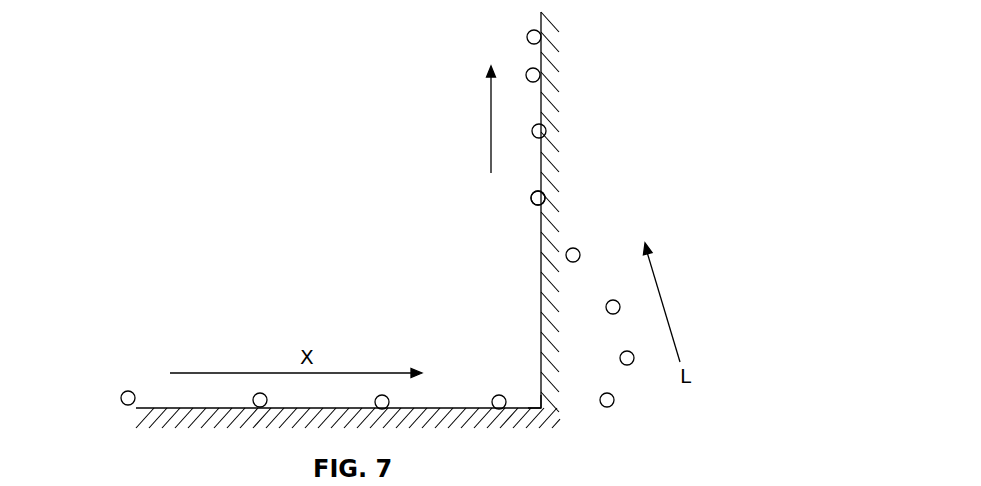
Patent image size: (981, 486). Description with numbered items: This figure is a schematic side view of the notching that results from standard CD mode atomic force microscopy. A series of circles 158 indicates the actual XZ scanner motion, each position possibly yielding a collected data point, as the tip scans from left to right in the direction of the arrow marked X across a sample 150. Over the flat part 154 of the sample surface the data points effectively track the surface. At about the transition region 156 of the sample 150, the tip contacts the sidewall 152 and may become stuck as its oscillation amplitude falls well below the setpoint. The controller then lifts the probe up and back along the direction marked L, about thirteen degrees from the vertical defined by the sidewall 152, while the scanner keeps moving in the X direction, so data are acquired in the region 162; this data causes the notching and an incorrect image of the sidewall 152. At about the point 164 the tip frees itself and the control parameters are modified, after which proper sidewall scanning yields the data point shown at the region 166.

The sample 150 is at (391, 220).
The sidewall 152 is at (540, 265).
The flat part 154 is at (158, 408).
The transition region 156 is at (520, 388).
The circles 158 is at (547, 130).
The region 162 is at (652, 363).
The point 164 is at (522, 203).
The region 166 is at (497, 60).